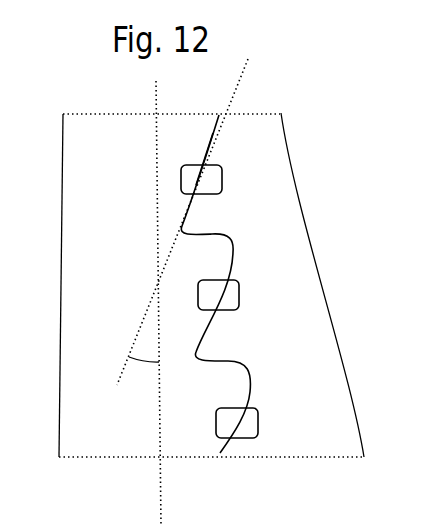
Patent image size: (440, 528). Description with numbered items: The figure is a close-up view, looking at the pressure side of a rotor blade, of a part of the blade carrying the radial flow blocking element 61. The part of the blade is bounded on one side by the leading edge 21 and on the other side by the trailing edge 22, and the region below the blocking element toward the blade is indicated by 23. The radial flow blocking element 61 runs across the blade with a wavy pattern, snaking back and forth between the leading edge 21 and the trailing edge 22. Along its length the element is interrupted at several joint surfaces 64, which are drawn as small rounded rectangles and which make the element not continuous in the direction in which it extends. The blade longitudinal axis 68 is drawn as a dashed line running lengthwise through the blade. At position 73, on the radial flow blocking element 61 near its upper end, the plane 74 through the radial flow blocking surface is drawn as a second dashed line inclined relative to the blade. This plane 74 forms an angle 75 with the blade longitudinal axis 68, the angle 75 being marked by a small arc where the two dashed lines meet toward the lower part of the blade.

The leading edge 21 is at (60, 313).
The trailing edge 22 is at (328, 317).
The base region 23 is at (123, 431).
The radial flow blocking element 61 is at (235, 238).
The joint surfaces 64 is at (222, 178).
The blade longitudinal axis 68 is at (160, 498).
The position 73 is at (194, 179).
The plane through the radial flow blocking surface 74 is at (143, 320).
The angle 75 is at (148, 367).